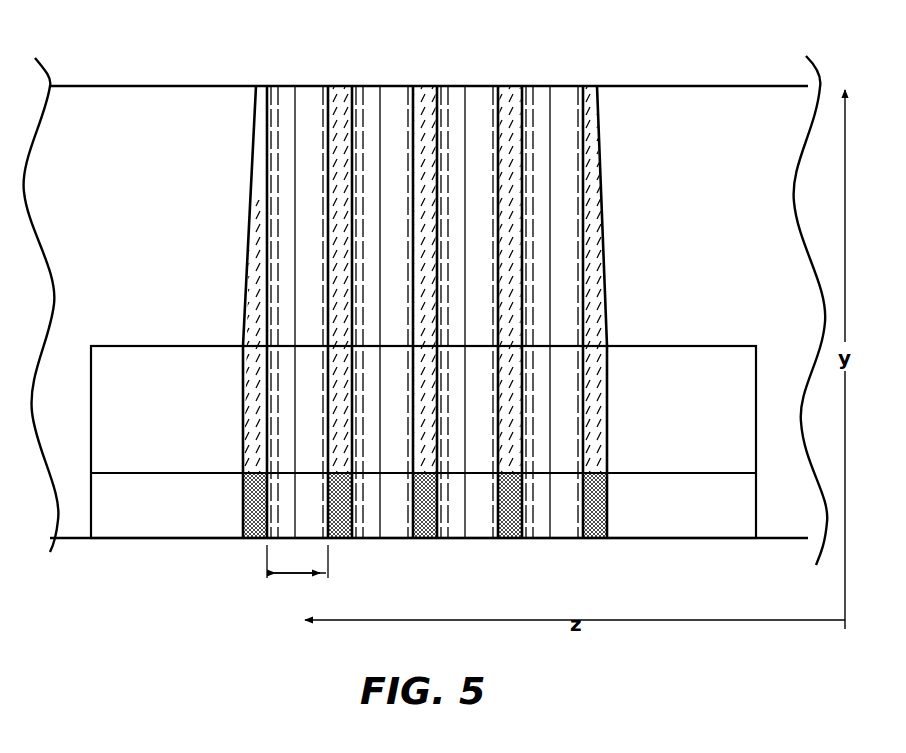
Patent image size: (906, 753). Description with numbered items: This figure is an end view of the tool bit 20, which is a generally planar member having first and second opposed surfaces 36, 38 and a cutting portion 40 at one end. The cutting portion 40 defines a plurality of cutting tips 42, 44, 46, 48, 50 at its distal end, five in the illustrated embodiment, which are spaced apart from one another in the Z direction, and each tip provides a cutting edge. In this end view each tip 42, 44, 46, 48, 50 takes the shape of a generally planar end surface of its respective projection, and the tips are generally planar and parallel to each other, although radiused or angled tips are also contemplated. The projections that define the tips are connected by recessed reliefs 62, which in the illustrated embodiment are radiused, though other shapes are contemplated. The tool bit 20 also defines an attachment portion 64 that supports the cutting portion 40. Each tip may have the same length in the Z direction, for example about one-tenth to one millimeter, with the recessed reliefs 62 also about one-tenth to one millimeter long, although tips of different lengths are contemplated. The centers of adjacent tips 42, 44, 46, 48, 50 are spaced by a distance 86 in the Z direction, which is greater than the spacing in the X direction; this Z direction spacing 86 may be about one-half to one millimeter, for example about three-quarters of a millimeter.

The tool bit 20 is at (101, 50).
The first surface 36 is at (378, 82).
The second surface 38 is at (482, 542).
The cutting portion 40 is at (670, 525).
The cutting tip 42 is at (250, 533).
The cutting tip 44 is at (340, 533).
The cutting tip 46 is at (425, 533).
The cutting tip 48 is at (510, 533).
The cutting tip 50 is at (595, 533).
The recessed reliefs 62 is at (567, 85).
The attachment portion 64 is at (670, 97).
The Z direction spacing 86 is at (302, 577).